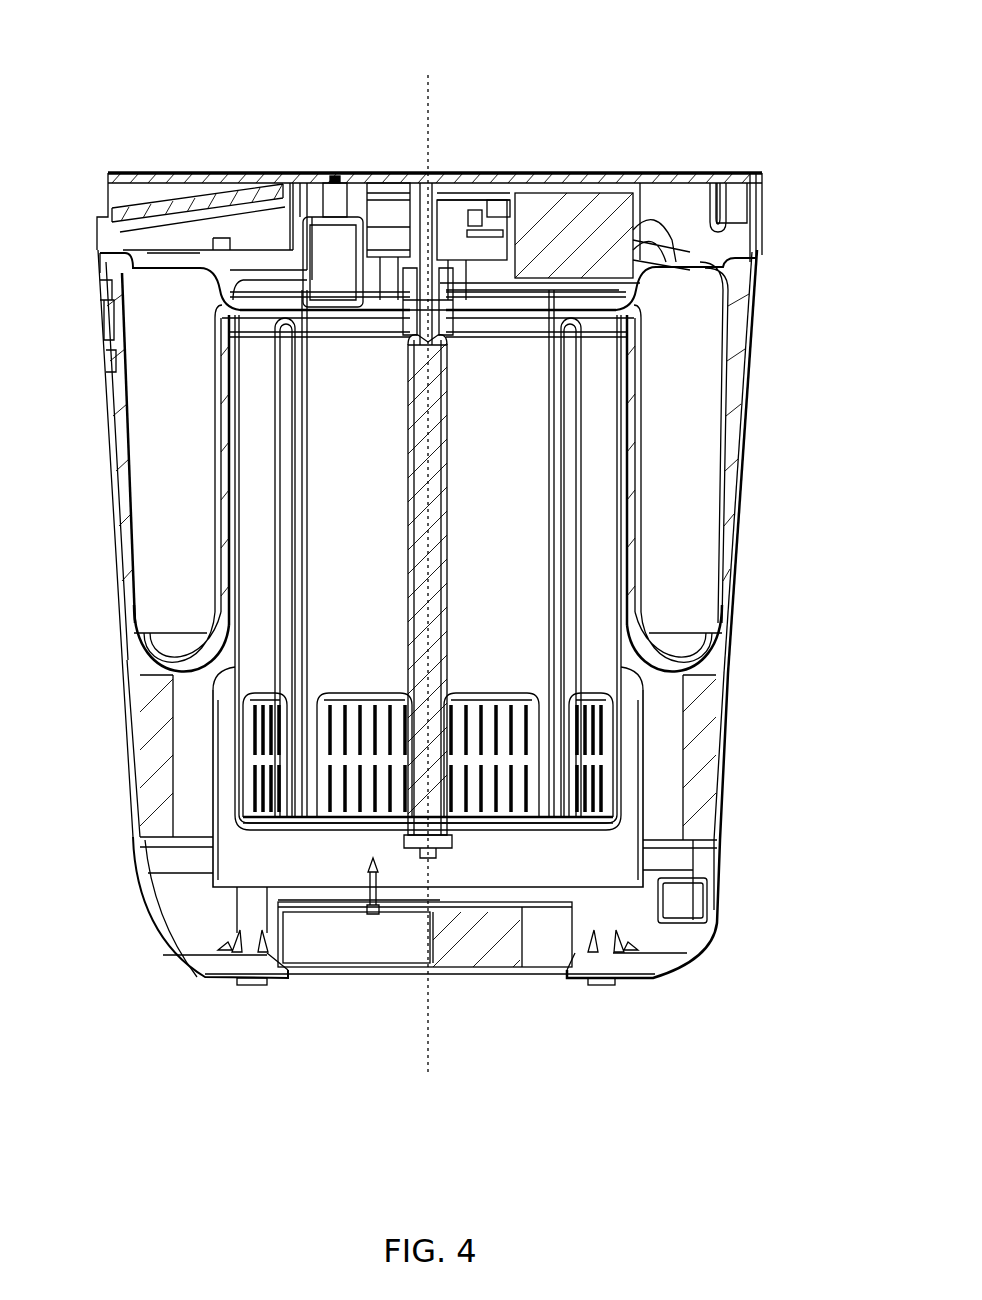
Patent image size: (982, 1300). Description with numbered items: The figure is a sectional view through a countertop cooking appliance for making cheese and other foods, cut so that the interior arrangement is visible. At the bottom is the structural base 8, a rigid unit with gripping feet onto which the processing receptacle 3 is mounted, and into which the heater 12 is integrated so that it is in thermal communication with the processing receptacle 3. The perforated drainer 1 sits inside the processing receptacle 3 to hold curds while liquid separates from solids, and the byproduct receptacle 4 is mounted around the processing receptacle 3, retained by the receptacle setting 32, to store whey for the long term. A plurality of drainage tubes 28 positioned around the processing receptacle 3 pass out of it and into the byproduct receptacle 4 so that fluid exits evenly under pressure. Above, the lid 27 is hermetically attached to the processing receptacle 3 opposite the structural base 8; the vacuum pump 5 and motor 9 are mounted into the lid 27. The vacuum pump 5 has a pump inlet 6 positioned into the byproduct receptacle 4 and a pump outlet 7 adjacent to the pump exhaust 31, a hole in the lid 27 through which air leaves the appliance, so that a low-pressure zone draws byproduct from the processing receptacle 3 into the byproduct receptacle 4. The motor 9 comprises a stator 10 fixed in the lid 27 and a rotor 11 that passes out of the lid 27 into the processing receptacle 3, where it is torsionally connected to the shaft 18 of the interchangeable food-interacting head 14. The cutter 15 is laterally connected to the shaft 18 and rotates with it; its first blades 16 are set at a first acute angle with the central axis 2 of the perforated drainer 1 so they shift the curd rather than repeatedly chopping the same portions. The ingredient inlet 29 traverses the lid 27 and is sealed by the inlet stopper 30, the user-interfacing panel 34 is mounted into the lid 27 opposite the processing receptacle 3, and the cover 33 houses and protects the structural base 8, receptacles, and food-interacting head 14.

The perforated drainer 1 is at (622, 818).
The central axis 2 is at (435, 1063).
The processing receptacle 3 is at (490, 628).
The byproduct receptacle 4 is at (674, 583).
The vacuum pump 5 is at (563, 205).
The pump inlet 6 is at (670, 205).
The pump outlet 7 is at (718, 240).
The structural base 8 is at (150, 917).
The motor 9 is at (486, 218).
The stator 10 is at (405, 178).
The rotor 11 is at (443, 178).
The heater 12 is at (340, 953).
The interchangeable food-interacting head 14 is at (355, 640).
The cutter 15 is at (403, 410).
The first blades 16 is at (417, 473).
The shaft 18 is at (440, 357).
The lid 27 is at (525, 62).
The drainage tubes 28 is at (290, 410).
The ingredient inlet 29 is at (305, 185).
The inlet stopper 30 is at (345, 175).
The pump exhaust 31 is at (713, 182).
The receptacle setting 32 is at (150, 712).
The cover 33 is at (107, 456).
The user-interfacing panel 34 is at (245, 195).